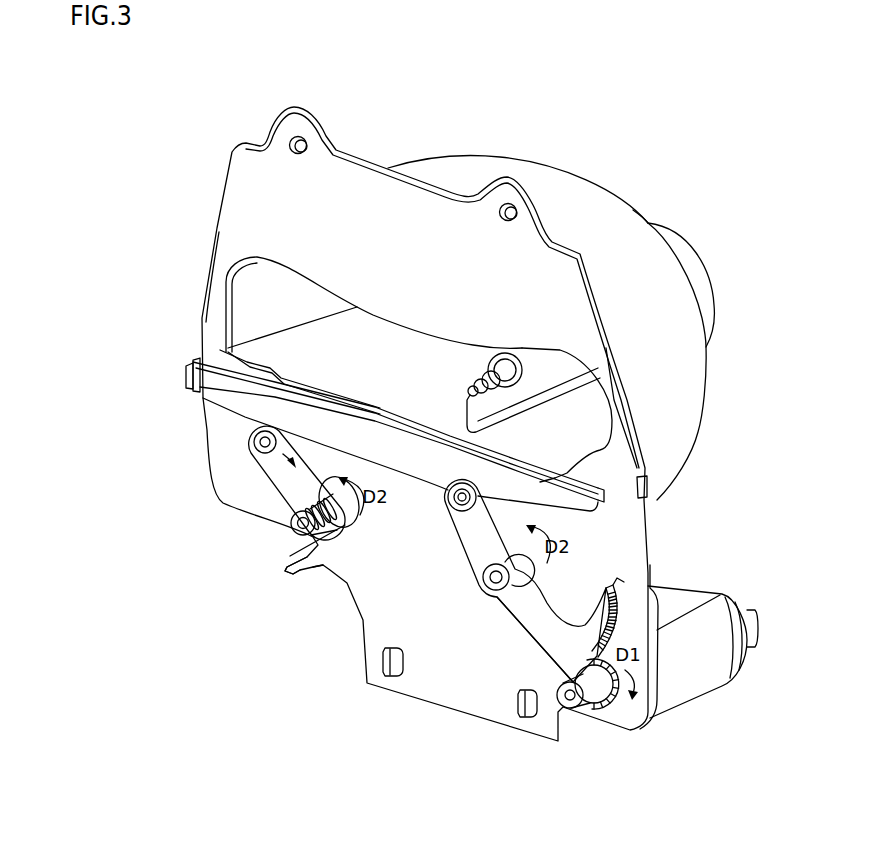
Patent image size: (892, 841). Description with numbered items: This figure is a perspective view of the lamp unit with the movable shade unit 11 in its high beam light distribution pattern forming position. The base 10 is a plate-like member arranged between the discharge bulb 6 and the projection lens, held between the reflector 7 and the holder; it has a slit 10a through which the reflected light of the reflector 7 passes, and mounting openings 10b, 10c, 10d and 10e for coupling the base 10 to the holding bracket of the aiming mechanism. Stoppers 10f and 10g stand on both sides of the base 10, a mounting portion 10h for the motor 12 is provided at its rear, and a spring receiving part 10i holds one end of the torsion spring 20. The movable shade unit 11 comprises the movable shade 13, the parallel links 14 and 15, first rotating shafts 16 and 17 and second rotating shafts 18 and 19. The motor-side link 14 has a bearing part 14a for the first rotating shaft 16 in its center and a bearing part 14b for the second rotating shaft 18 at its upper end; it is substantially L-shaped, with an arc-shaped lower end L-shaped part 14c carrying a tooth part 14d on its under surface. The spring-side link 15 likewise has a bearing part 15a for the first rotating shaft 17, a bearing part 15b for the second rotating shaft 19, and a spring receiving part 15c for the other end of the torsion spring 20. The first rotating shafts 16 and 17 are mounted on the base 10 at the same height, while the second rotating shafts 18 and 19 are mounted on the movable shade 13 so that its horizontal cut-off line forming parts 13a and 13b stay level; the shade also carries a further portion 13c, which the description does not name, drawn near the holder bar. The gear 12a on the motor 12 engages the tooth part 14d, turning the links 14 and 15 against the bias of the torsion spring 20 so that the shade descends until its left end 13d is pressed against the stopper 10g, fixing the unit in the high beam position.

The discharge bulb 6 is at (540, 355).
The reflector 7 is at (590, 180).
The base 10 is at (225, 147).
The slit 10a is at (228, 280).
The mounting opening 10b is at (305, 135).
The mounting opening 10c is at (512, 203).
The mounting opening 10d is at (387, 665).
The mounting opening 10e is at (522, 716).
The stopper 10f is at (650, 484).
The stopper 10g is at (185, 370).
The mounting portion 10h is at (658, 722).
The spring receiving part 10i is at (290, 576).
The movable shade unit 11 is at (648, 520).
The motor 12 is at (690, 678).
The gear 12a is at (612, 704).
The movable shade 13 is at (400, 453).
The horizontal cut-off line forming part 13a is at (575, 407).
The horizontal cut-off line forming part 13b is at (215, 350).
The holder lower flange 13c is at (602, 482).
The left end 13d is at (197, 385).
The motor-side link 14 is at (540, 648).
The bearing part 14a is at (515, 593).
The bearing part 14b is at (498, 568).
The lower end L-shaped part 14c is at (620, 582).
The tooth part 14d is at (622, 590).
The spring-side link 15 is at (258, 472).
The bearing part 15a is at (288, 535).
The bearing part 15b is at (253, 435).
The spring receiving part 15c is at (283, 513).
The first rotating shaft 16 is at (495, 582).
The first rotating shaft 17 is at (292, 552).
The second rotating shaft 18 is at (455, 503).
The second rotating shaft 19 is at (259, 444).
The torsion spring 20 is at (322, 570).